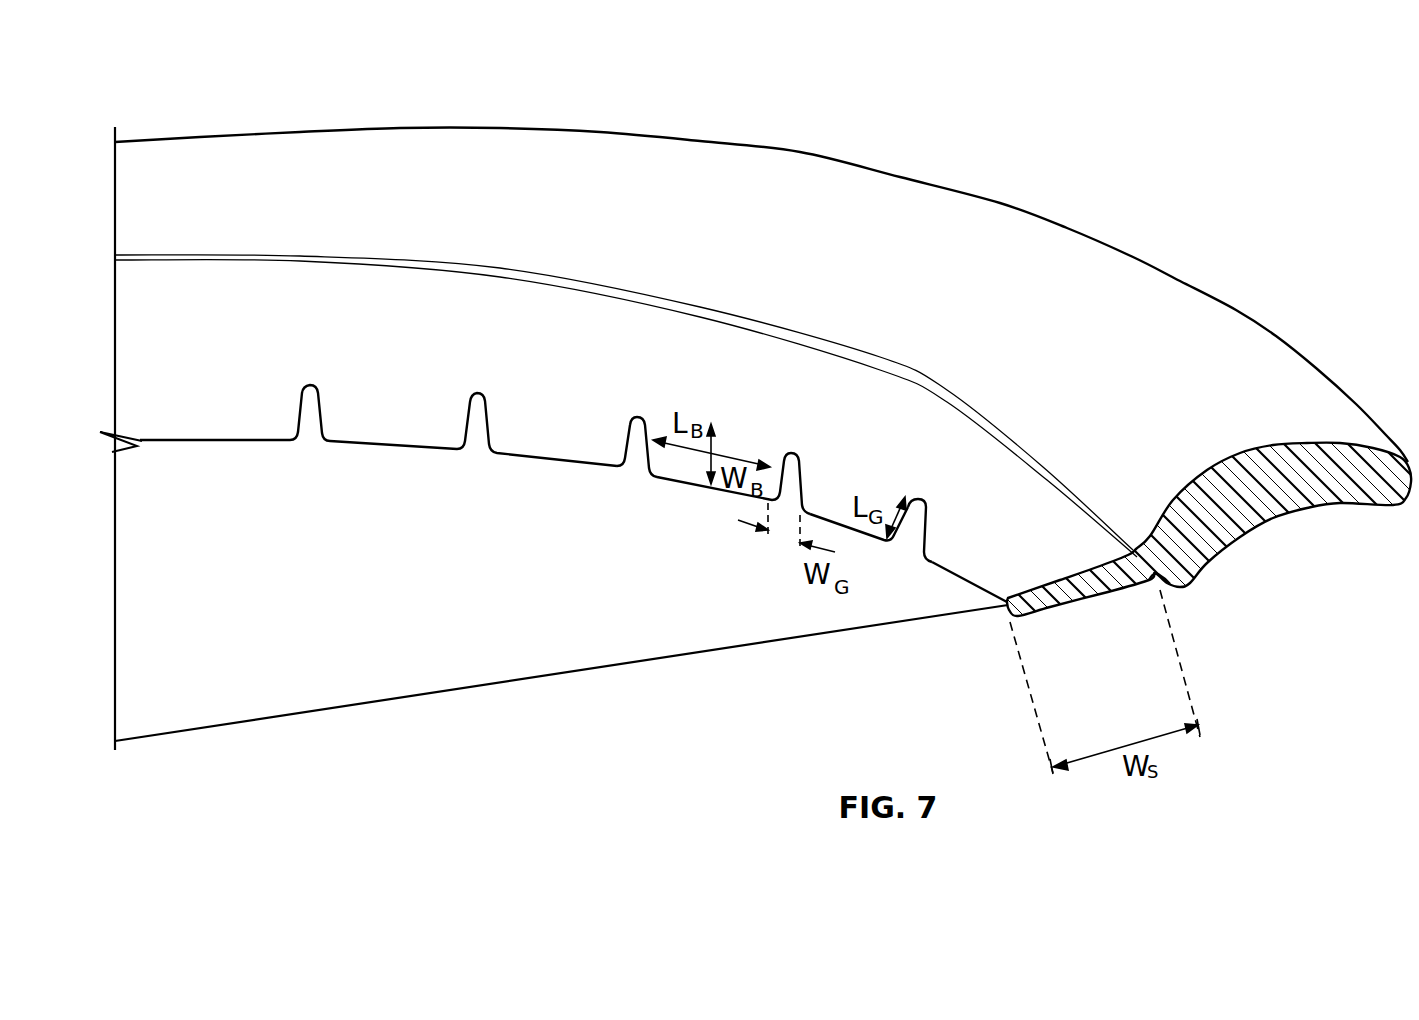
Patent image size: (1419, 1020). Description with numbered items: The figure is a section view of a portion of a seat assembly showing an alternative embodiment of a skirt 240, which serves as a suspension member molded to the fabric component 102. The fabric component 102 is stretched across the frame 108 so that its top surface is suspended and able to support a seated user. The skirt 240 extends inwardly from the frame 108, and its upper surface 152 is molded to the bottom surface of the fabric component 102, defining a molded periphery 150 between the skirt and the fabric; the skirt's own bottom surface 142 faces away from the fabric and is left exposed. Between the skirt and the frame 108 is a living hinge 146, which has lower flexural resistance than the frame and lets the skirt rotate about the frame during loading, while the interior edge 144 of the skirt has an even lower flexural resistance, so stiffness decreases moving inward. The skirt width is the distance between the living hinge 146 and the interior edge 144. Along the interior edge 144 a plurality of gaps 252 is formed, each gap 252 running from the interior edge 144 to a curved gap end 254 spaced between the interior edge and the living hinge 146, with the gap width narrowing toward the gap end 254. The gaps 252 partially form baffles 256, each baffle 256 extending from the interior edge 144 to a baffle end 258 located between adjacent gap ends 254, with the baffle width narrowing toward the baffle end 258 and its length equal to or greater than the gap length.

The fabric component 102 is at (435, 670).
The frame 108 is at (705, 190).
The bottom surface 142 is at (1068, 618).
The interior edge 144 is at (717, 487).
The living hinge 146 is at (1043, 467).
The molded periphery 150 is at (380, 155).
The upper surface 152 is at (505, 377).
The skirt 240 is at (1130, 582).
The gap 252 is at (898, 550).
The gap end 254 is at (920, 497).
The baffle 256 is at (677, 467).
The baffle end 258 is at (727, 418).